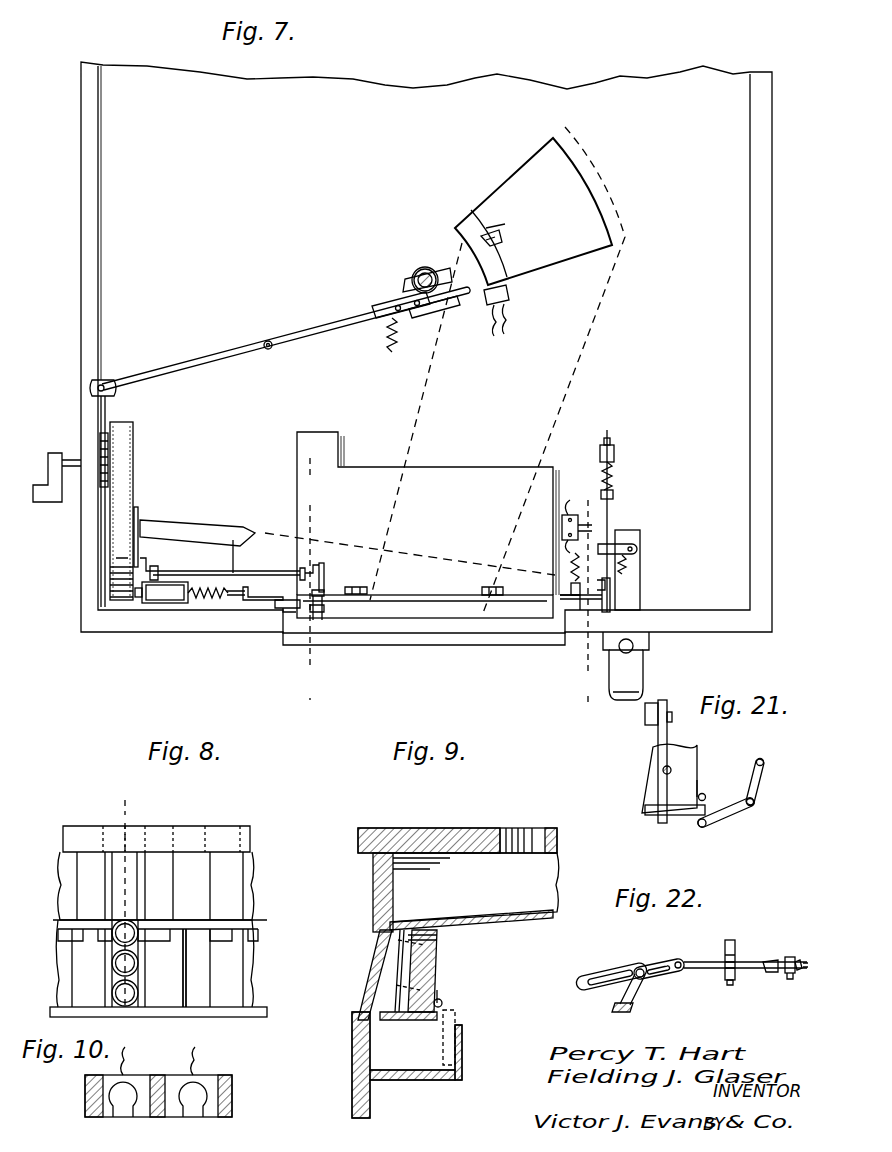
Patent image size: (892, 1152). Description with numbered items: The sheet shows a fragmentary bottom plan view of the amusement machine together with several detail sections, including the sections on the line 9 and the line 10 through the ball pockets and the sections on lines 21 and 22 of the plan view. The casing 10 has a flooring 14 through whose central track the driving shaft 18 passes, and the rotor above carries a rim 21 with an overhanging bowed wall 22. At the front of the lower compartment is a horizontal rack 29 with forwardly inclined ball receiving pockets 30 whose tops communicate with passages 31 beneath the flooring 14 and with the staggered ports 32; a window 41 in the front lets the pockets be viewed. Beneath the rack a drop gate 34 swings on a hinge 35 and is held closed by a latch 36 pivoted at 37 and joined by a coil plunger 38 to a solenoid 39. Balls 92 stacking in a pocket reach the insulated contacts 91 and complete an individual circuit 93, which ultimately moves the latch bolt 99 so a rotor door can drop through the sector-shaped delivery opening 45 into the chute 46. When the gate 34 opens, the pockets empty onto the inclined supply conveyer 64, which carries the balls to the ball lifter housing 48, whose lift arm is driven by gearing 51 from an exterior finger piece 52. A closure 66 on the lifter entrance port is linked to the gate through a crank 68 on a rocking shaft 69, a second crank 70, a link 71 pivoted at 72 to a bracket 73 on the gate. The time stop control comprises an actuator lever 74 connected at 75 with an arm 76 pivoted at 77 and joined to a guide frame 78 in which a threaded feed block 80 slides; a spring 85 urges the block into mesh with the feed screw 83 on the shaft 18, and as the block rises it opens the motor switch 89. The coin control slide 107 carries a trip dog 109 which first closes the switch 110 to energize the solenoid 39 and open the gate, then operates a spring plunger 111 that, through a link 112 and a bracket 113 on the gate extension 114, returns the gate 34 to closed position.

In FIG. 8, the section line 9— 9 is at (124, 909).
In FIG. 8, the body or casing 10 is at (50, 929).
In FIG. 7, the flooring 14 is at (745, 466).
In FIG. 8, the flooring 14 is at (196, 826).
In FIG. 9, the flooring 14 is at (423, 828).
In FIG. 7, the driving shaft 18 is at (413, 273).
In FIG. 7, the rim 21 is at (314, 579).
In FIG. 7, the overhanging bowed wall 22 is at (588, 589).
In FIG. 7, the horizontal rack 29 is at (452, 467).
In FIG. 8, the horizontal rack 29 is at (243, 963).
In FIG. 10, the horizontal rack 29 is at (232, 1110).
In FIG. 9, the horizontal rack 29 is at (440, 962).
In FIG. 8, the ball receiving pockets 30 is at (196, 1000).
In FIG. 10, the ball receiving pockets 30 is at (193, 1110).
In FIG. 9, the ball receiving pockets 30 is at (410, 960).
In FIG. 8, the passages 31 is at (205, 873).
In FIG. 9, the passages 31 is at (474, 891).
In FIG. 9, the ports 32 is at (522, 828).
In FIG. 7, the drop gate 34 is at (410, 618).
In FIG. 8, the drop gate 34 is at (267, 1012).
In FIG. 9, the drop gate 34 is at (416, 1022).
In FIG. 21, the drop gate 34 is at (645, 816).
In FIG. 7, the hinge 35 is at (490, 587).
In FIG. 9, the hinge 35 is at (444, 1003).
In FIG. 21, the hinge 35 is at (702, 790).
In FIG. 7, the latch 36 is at (283, 608).
In FIG. 21, the latch 36 is at (658, 782).
In FIG. 21, the pivot 37 is at (674, 722).
In FIG. 7, the coil plunger 38 is at (240, 600).
In FIG. 21, the coil plunger 38 is at (662, 768).
In FIG. 7, the solenoid 39 is at (165, 603).
In FIG. 9, the window 41 is at (372, 985).
In FIG. 7, the delivery opening 45 is at (526, 172).
In FIG. 7, the chute 46 is at (600, 307).
In FIG. 7, the circular housing 48 is at (120, 553).
In FIG. 7, the gearing 51 is at (100, 440).
In FIG. 7, the finger piece 52 is at (34, 504).
In FIG. 7, the supply conveyer 64 is at (202, 526).
In FIG. 9, the supply conveyer 64 is at (463, 1045).
In FIG. 7, the closure 66 is at (139, 510).
In FIG. 7, the crank 68 is at (154, 566).
In FIG. 7, the rocking shaft 69 is at (235, 540).
In FIG. 21, the rocking shaft 69 is at (763, 760).
In FIG. 7, the second crank 70 is at (321, 563).
In FIG. 21, the second crank 70 is at (765, 790).
In FIG. 7, the link 71 is at (325, 581).
In FIG. 21, the link 71 is at (740, 812).
In FIG. 7, the pivot 72 is at (318, 598).
In FIG. 21, the pivot 72 is at (708, 826).
In FIG. 7, the bracket 73 is at (316, 613).
In FIG. 21, the bracket 73 is at (708, 808).
In FIG. 7, the actuator lever 74 is at (107, 410).
In FIG. 7, the connection 75 is at (113, 379).
In FIG. 7, the arm 76 is at (300, 347).
In FIG. 7, the pivot 77 is at (265, 341).
In FIG. 7, the guide frame 78 is at (390, 302).
In FIG. 7, the threaded feed block 80 is at (437, 317).
In FIG. 7, the feed screw 83 is at (428, 268).
In FIG. 7, the spring 85 is at (388, 352).
In FIG. 7, the switch 89 is at (510, 298).
In FIG. 8, the contacts 91 is at (108, 929).
In FIG. 10, the contacts 91 is at (95, 1095).
In FIG. 9, the contacts 91 is at (414, 935).
In FIG. 8, the balls 92 is at (112, 962).
In FIG. 8, the circuit 93 is at (112, 993).
In FIG. 7, the latch bolt 99 is at (503, 258).
In FIG. 7, the slide member 107 is at (650, 663).
In FIG. 7, the trip dog 109 is at (624, 535).
In FIG. 7, the switch 110 is at (560, 523).
In FIG. 7, the spring plunger 111 is at (609, 430).
In FIG. 22, the spring plunger 111 is at (770, 975).
In FIG. 7, the link 112 is at (612, 600).
In FIG. 22, the link 112 is at (648, 963).
In FIG. 7, the bracket 113 is at (567, 604).
In FIG. 22, the bracket 113 is at (610, 978).
In FIG. 7, the extension 114 is at (562, 593).
In FIG. 22, the extension 114 is at (634, 1008).